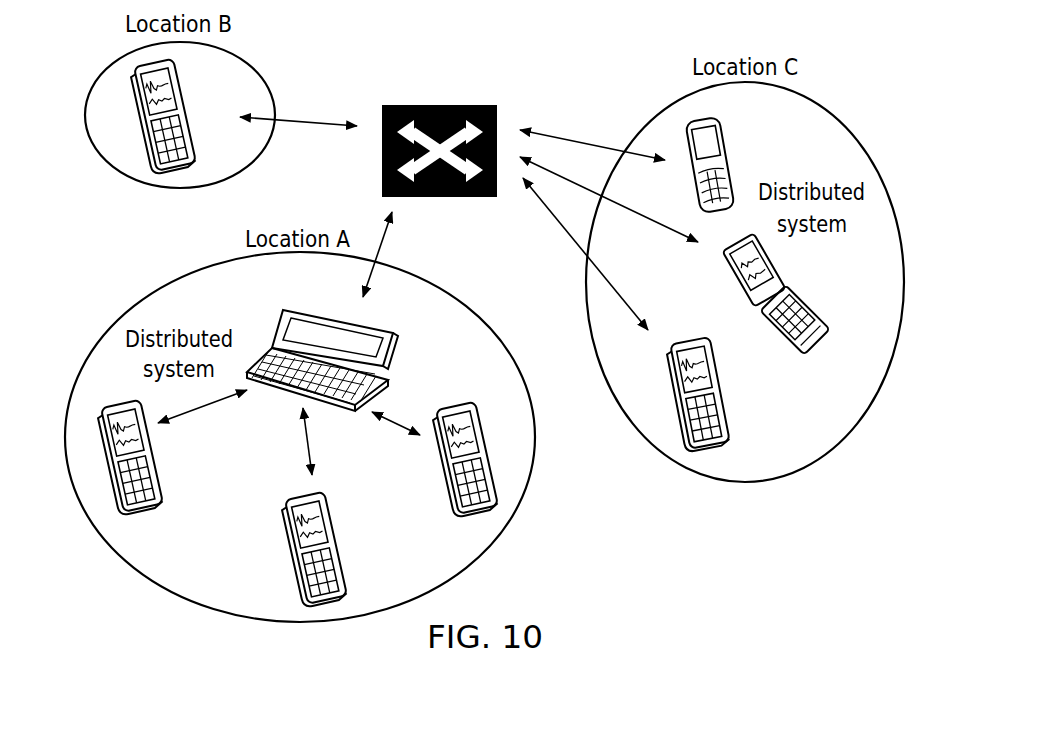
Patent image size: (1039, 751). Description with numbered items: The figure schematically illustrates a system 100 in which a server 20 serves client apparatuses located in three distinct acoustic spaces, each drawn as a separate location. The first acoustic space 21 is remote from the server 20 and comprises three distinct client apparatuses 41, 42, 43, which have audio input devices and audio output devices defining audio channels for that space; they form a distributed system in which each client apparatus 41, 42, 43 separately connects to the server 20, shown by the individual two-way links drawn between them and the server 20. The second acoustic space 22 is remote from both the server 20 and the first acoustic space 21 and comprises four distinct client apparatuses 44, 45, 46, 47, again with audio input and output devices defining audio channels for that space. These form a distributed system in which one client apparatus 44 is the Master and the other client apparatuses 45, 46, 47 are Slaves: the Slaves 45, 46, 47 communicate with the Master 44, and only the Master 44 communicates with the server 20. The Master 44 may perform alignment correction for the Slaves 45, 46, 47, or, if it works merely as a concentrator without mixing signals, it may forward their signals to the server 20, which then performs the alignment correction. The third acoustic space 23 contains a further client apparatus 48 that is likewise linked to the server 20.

The system 100 is at (840, 43).
The server 20 is at (440, 105).
The first acoustic space 21 is at (847, 433).
The second acoustic space 22 is at (530, 440).
The third acoustic space 23 is at (132, 178).
The client apparatus 41 is at (730, 152).
The client apparatus 42 is at (824, 320).
The client apparatus 43 is at (726, 418).
The Master client apparatus 44 is at (395, 350).
The Slave client apparatus 45 is at (447, 477).
The Slave client apparatus 46 is at (286, 531).
The Slave client apparatus 47 is at (161, 475).
The client apparatus 48 is at (184, 110).